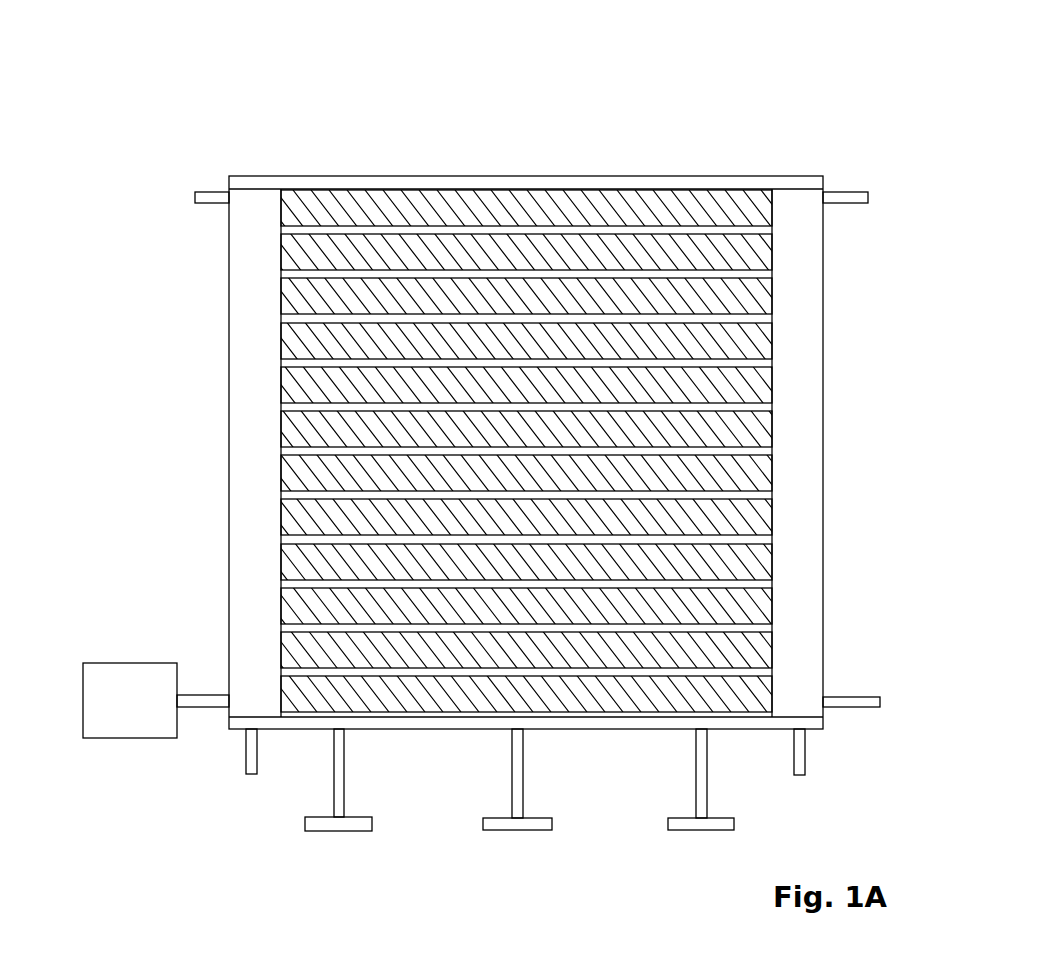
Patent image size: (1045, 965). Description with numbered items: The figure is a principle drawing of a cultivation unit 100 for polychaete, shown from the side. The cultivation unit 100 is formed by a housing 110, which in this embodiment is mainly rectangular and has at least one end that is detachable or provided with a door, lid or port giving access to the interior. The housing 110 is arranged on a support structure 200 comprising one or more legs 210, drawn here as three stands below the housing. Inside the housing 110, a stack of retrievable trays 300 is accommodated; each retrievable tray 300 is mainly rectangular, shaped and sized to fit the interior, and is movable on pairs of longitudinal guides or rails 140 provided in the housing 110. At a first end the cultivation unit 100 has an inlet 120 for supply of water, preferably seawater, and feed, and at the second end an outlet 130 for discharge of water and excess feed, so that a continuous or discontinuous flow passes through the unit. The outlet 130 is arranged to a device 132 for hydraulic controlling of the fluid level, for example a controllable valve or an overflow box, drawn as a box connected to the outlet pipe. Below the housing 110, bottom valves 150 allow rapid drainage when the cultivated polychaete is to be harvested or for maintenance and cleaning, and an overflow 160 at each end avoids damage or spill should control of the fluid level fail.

The cultivation unit 100 is at (306, 115).
The housing 110 is at (241, 168).
The inlet 120 is at (858, 700).
The outlet 130 is at (200, 698).
The device for hydraulic controlling of the fluid level 132 is at (111, 712).
The guides or rails 140 is at (615, 189).
The bottom valves 150 is at (243, 755).
The overflow 160 is at (210, 200).
The support structure 200 is at (275, 826).
The legs 210 is at (317, 830).
The retrievable tray 300 is at (441, 196).